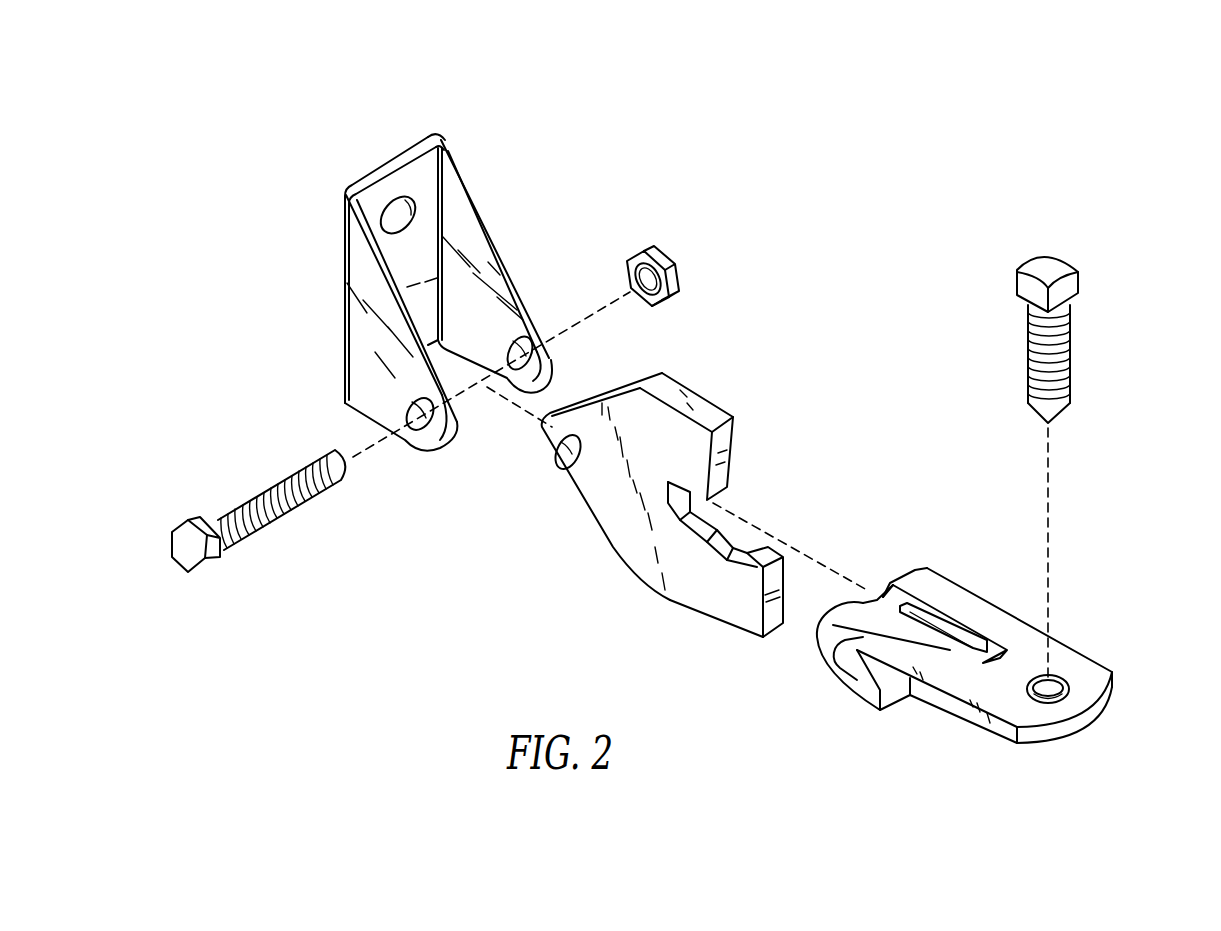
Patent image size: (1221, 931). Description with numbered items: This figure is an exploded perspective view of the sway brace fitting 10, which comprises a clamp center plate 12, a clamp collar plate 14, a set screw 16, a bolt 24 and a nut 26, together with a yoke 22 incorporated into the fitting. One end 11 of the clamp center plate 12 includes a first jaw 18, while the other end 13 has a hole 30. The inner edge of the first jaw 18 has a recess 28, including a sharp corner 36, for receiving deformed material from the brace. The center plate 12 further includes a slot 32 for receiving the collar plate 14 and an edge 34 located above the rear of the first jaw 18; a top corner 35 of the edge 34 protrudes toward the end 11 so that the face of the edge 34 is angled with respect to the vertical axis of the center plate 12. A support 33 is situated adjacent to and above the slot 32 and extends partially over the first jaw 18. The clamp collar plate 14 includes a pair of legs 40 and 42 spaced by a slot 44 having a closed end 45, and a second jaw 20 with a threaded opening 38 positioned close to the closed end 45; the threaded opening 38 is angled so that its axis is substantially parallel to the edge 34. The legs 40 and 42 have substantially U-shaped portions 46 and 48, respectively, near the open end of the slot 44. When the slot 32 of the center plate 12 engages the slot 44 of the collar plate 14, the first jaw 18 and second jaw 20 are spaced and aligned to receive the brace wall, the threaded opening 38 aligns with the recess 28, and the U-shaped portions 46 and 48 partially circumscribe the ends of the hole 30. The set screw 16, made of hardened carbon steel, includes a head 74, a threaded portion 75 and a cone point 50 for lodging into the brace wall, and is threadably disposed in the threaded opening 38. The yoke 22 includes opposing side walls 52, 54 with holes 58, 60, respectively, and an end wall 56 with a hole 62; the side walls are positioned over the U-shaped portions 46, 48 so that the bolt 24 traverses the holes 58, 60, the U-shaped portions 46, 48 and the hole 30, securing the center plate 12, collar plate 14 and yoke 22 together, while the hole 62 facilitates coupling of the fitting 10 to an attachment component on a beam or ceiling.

The sway brace fitting 10 is at (862, 168).
The one end of the clamp center plate 11 is at (740, 607).
The clamp center plate 12 is at (564, 591).
The other end of the clamp center plate 13 is at (552, 436).
The clamp collar plate 14 is at (1135, 720).
The set screw 16 is at (1088, 344).
The first jaw 18 is at (713, 587).
The second jaw 20 is at (1013, 713).
The yoke 22 is at (330, 258).
The bolt 24 is at (247, 536).
The nut 26 is at (667, 262).
The recess 28 is at (737, 548).
The hole 30 is at (553, 462).
The slot 32 is at (672, 513).
The support 33 is at (700, 463).
The edge 34 is at (724, 437).
The top corner 35 is at (722, 417).
The sharp corner 36 is at (753, 553).
The threaded opening 38 is at (1060, 675).
The leg 40 is at (855, 688).
The leg 42 is at (947, 593).
The slot 44 is at (957, 672).
The closed end 45 is at (990, 648).
The U-shaped portion 46 is at (827, 642).
The U-shaped portion 48 is at (888, 593).
The cone point 50 is at (1057, 423).
The side wall 52 is at (367, 337).
The side wall 54 is at (463, 210).
The end wall 56 is at (420, 142).
The hole 58 is at (413, 430).
The hole 60 is at (510, 345).
The hole 62 is at (400, 197).
The head 74 is at (1045, 262).
The threaded portion 75 is at (1027, 358).